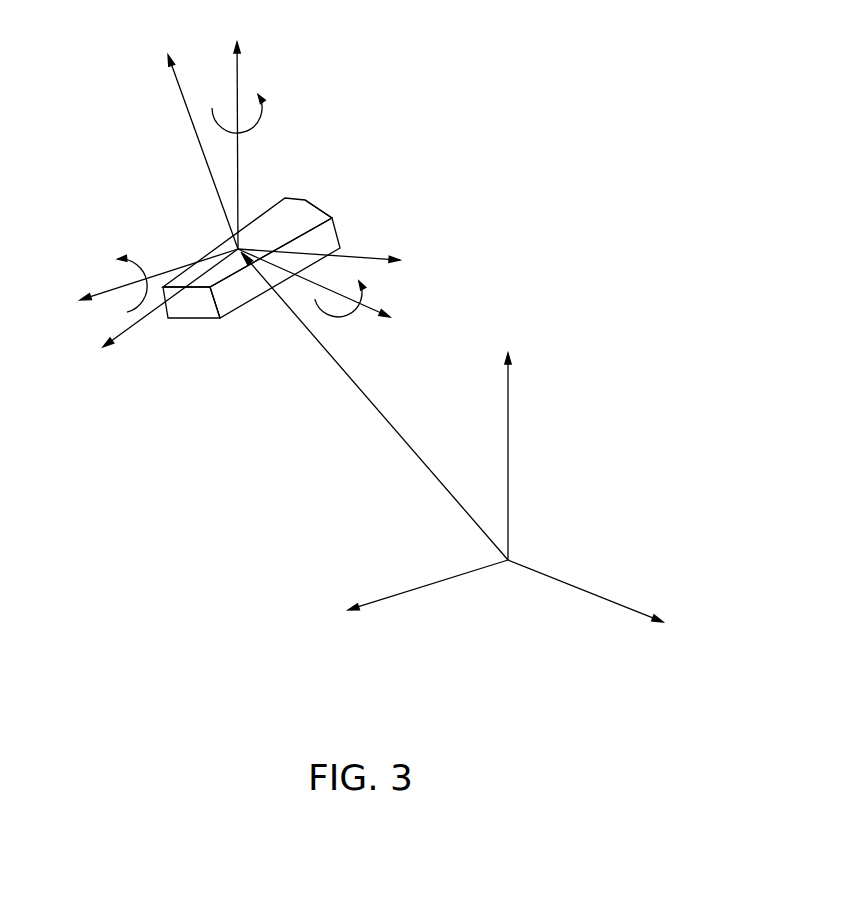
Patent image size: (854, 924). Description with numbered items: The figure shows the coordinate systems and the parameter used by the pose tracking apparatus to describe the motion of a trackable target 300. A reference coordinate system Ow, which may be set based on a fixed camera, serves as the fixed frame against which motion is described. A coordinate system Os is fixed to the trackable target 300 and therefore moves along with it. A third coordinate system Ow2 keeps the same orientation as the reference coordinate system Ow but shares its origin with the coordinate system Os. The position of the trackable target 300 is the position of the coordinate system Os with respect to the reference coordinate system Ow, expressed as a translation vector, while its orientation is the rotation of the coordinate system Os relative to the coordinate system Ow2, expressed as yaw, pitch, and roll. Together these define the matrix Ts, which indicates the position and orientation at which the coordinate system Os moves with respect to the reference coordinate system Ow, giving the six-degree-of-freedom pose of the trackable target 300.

The trackable target 300 is at (318, 205).
The coordinate system Os is at (260, 203).
The coordinate system Ow' Ow2 is at (233, 183).
The reference coordinate system Ow is at (508, 479).
The matrix T_s^w Ts is at (263, 328).